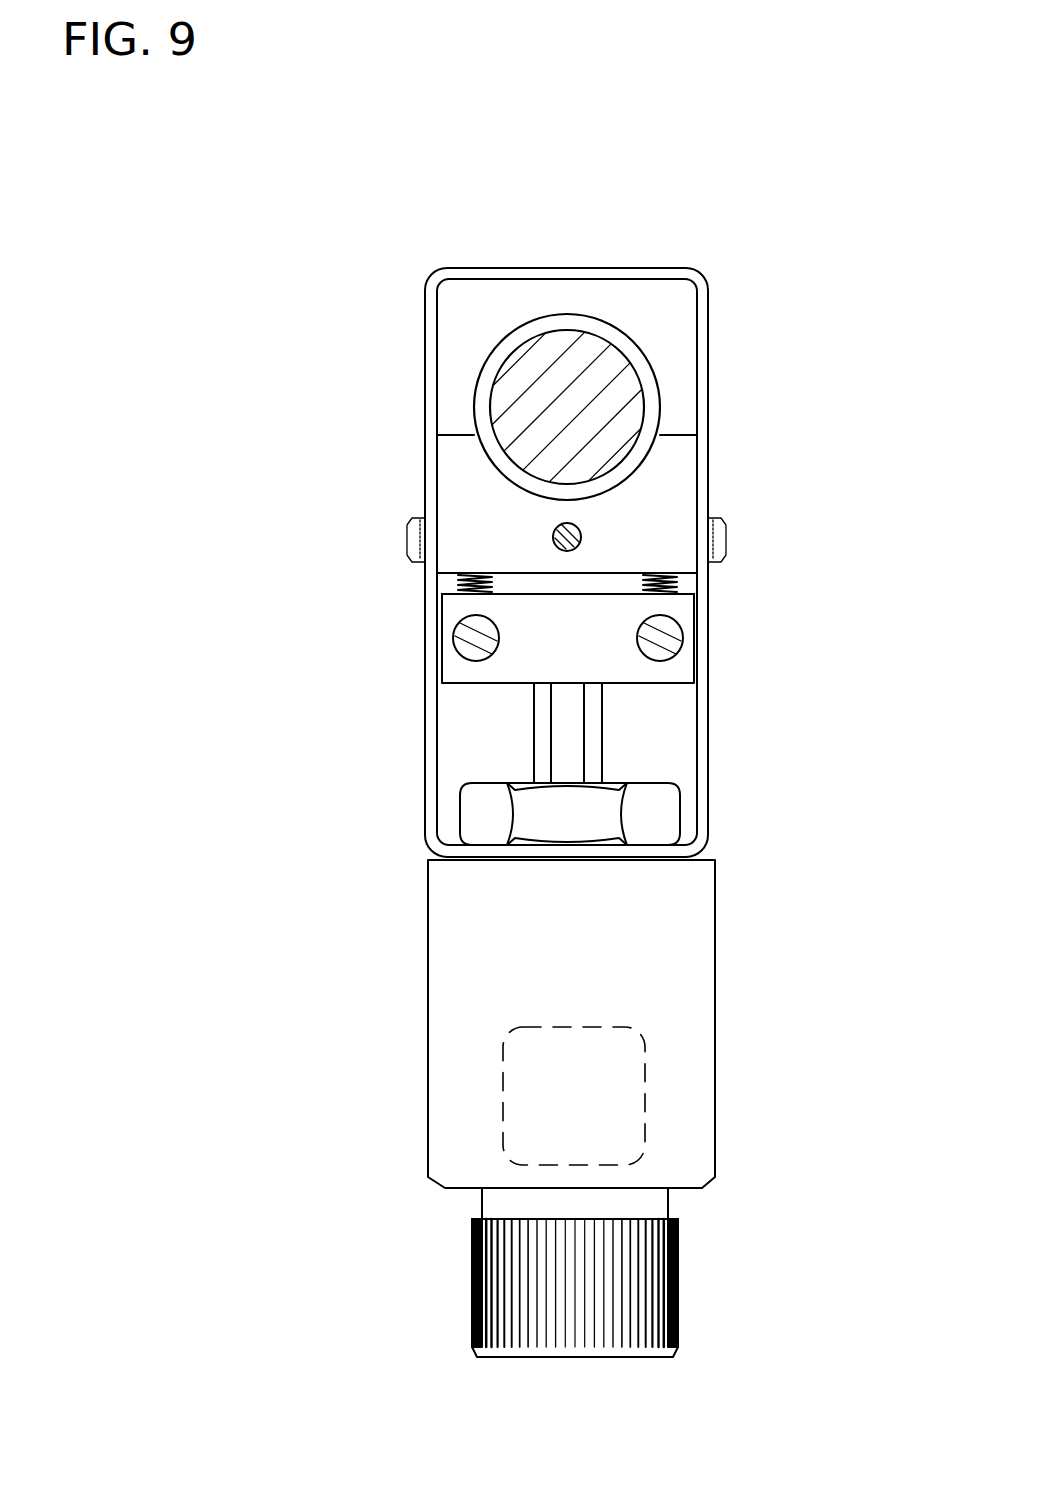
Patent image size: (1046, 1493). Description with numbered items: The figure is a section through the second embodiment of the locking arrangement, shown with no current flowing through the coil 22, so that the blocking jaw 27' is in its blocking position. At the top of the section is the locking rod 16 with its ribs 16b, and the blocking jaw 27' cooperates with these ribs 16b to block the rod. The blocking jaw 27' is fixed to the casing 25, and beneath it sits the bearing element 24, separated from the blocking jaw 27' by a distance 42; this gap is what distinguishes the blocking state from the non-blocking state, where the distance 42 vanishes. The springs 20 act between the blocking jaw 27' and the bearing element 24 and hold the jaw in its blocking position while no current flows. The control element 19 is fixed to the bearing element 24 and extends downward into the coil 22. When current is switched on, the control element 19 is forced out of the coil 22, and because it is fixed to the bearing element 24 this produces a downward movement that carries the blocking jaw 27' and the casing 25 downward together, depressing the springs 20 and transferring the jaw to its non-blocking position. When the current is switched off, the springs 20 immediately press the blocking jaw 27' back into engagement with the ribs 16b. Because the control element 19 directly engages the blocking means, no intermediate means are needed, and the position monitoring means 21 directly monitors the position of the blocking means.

The casing 25 is at (697, 292).
The ribs of the locking rod 16b is at (632, 351).
The locking rod 16 is at (624, 417).
The blocking jaw 27' is at (662, 504).
The position monitoring means 21 is at (553, 534).
The distance 42 is at (597, 582).
The springs 20 is at (458, 588).
The bearing element 24 is at (630, 677).
The control element 19 is at (540, 738).
The coil 22 is at (597, 1105).